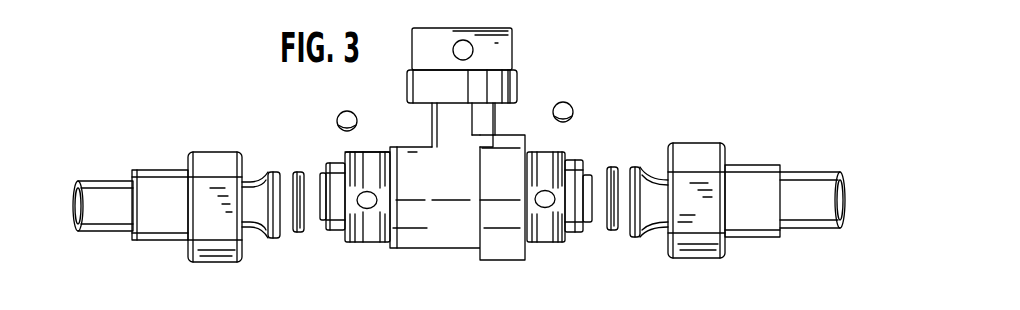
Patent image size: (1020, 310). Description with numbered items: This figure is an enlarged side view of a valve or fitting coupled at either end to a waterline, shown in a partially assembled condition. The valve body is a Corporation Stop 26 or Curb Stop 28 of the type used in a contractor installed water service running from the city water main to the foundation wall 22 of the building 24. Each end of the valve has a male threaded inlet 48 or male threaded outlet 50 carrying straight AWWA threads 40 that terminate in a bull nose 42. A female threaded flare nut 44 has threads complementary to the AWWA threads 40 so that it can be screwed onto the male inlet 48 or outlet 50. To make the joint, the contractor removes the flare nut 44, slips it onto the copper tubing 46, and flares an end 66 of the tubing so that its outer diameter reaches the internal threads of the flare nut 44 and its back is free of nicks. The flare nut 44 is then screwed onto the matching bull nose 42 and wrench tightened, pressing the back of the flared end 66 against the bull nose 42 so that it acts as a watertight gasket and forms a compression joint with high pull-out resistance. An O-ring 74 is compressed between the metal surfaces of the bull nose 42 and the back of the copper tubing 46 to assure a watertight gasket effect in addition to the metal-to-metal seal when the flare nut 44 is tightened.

The foundation wall 22 is at (497, 28).
The building 24 is at (257, 253).
The Corporation Stop 26 is at (343, 157).
The Curb Stop 28 is at (363, 185).
The AWWA threads 40 is at (358, 247).
The bull nose 42 is at (318, 170).
The flare nut 44 is at (692, 143).
The copper tubing 46 is at (107, 178).
The male threaded inlet 48 is at (368, 157).
The male threaded outlet 50 is at (548, 236).
The flared end 66 is at (272, 171).
The O-ring 74 is at (208, 162).